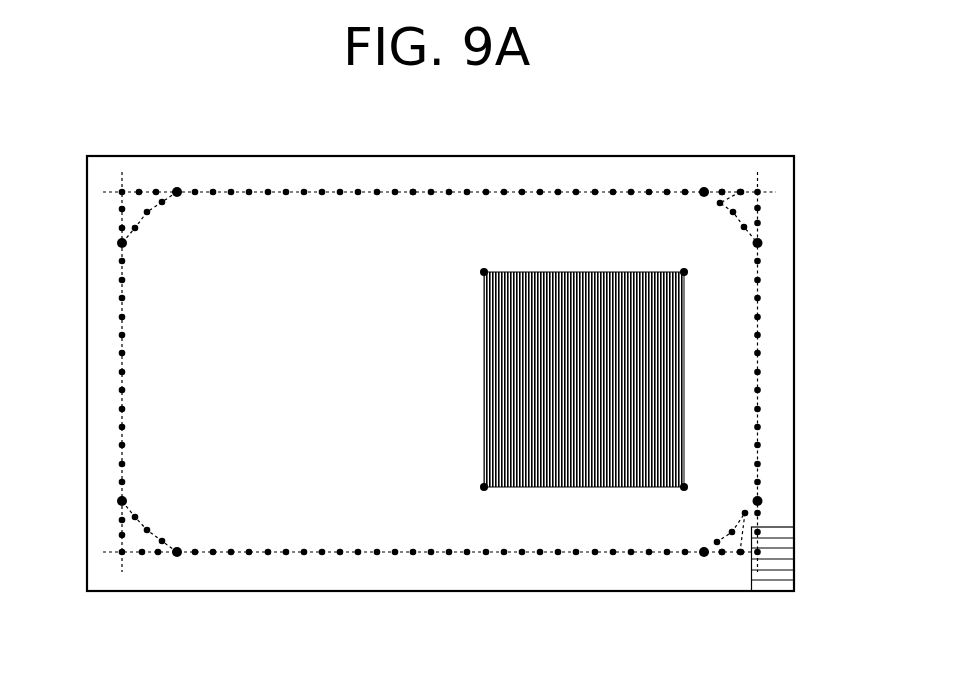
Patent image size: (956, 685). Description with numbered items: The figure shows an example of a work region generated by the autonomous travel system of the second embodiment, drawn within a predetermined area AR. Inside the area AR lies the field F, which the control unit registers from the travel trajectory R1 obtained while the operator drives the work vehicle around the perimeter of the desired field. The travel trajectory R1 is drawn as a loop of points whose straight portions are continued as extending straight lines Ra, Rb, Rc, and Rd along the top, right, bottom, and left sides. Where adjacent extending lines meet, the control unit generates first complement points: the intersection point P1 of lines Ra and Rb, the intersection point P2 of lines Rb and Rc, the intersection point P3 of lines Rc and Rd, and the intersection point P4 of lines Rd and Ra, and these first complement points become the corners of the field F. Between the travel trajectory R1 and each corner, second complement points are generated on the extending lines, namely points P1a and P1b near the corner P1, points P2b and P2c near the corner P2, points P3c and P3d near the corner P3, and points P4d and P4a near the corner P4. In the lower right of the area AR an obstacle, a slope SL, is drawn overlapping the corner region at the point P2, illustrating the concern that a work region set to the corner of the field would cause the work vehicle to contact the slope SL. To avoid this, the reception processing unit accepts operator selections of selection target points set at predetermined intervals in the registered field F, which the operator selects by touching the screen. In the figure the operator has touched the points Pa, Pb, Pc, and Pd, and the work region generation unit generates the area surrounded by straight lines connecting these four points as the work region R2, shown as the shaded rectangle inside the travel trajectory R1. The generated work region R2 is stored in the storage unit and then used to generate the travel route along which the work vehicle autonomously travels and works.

The predetermined area AR is at (637, 156).
The travel trajectory R1 is at (322, 190).
The extending straight line Ra is at (437, 190).
The extending straight line Rb is at (763, 303).
The extending straight line Rc is at (460, 556).
The extending straight line Rd is at (118, 308).
The field F is at (403, 212).
The work region R2 is at (530, 270).
The selected point Pa is at (684, 270).
The selected point Pb is at (684, 490).
The selected point Pc is at (484, 490).
The selected point Pd is at (484, 270).
The first complement point P1 is at (758, 192).
The second complement point P1a is at (741, 190).
The second complement point P1b is at (758, 243).
The first complement point P2 is at (764, 558).
The second complement point P2b is at (758, 532).
The second complement point P2c is at (741, 554).
The first complement point P3 is at (122, 552).
The second complement point P3c is at (177, 554).
The second complement point P3d is at (122, 535).
The first complement point P4 is at (122, 192).
The second complement point P4a is at (177, 190).
The second complement point P4d is at (122, 243).
The slope SL is at (771, 612).